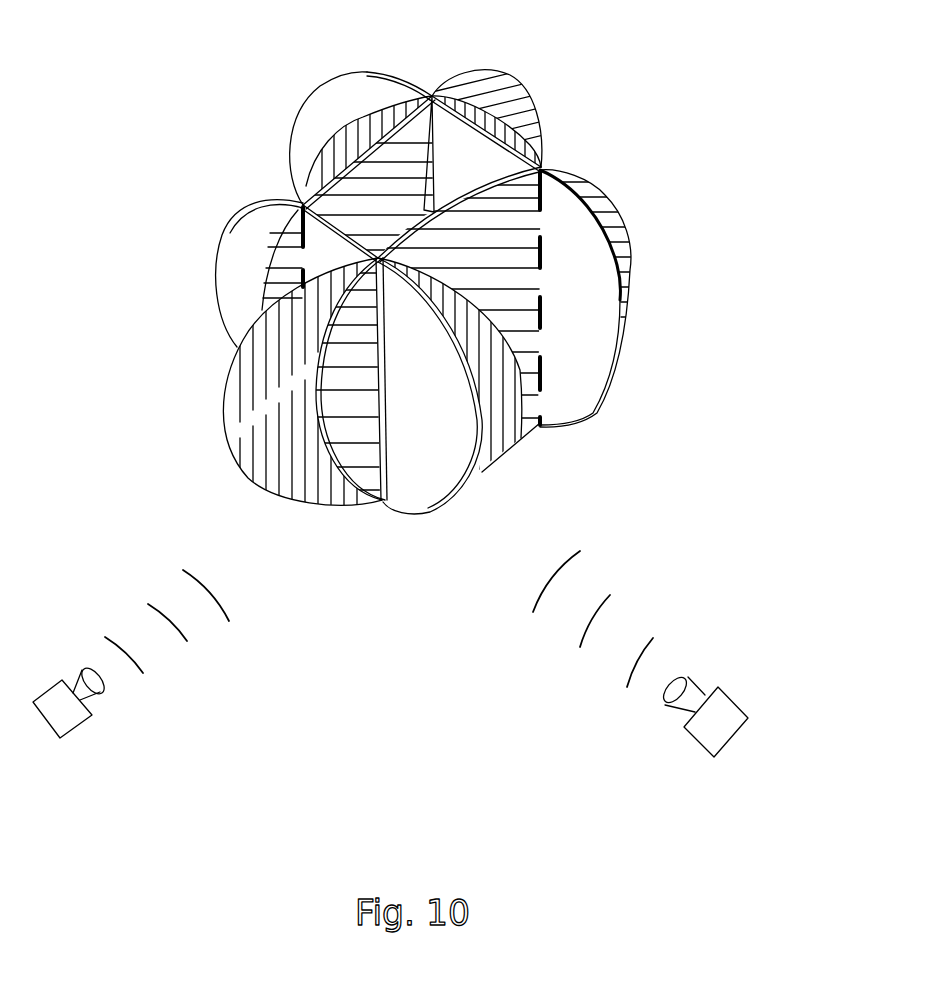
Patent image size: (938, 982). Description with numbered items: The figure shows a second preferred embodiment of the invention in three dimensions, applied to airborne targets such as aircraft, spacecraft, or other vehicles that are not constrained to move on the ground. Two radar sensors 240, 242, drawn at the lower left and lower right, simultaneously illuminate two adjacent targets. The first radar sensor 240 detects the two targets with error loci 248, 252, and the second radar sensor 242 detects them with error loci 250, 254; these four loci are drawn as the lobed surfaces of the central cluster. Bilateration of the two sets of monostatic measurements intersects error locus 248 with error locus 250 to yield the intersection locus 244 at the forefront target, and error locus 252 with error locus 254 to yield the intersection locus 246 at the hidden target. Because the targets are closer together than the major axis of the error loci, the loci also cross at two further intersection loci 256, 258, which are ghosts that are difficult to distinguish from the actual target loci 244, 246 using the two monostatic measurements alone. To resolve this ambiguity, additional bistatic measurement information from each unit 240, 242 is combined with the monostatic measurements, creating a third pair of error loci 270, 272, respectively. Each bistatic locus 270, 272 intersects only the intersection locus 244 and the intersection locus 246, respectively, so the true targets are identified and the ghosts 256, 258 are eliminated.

The first radar sensor 240 is at (727, 695).
The second radar sensor 242 is at (80, 727).
The intersection locus 244 is at (376, 505).
The intersection locus 246 is at (407, 97).
The error locus 248 is at (632, 217).
The error locus 250 is at (217, 243).
The error locus 252 is at (503, 73).
The error locus 254 is at (315, 83).
The ghost intersection locus 256 is at (303, 205).
The ghost intersection locus 258 is at (547, 193).
The bistatic error locus 270 is at (272, 488).
The bistatic error locus 272 is at (358, 122).